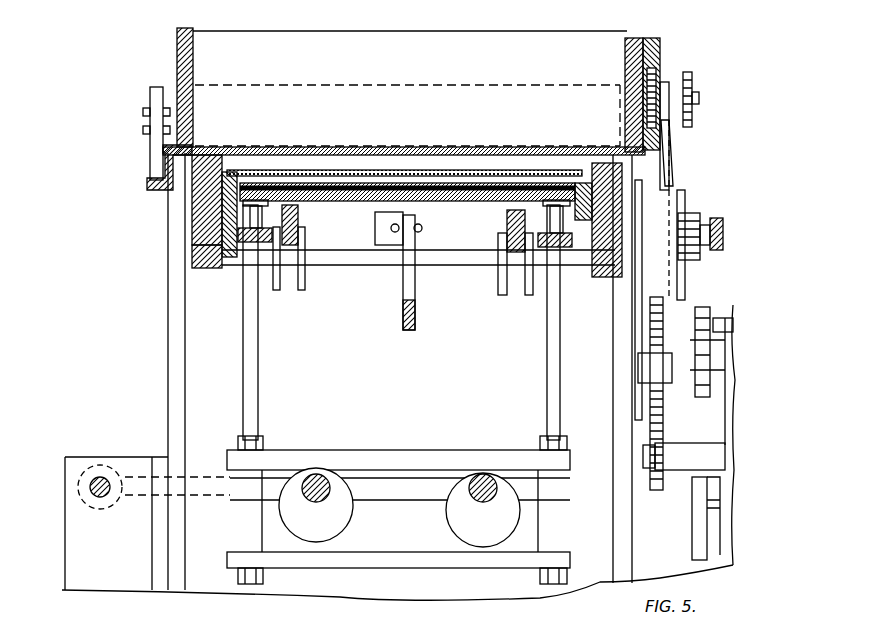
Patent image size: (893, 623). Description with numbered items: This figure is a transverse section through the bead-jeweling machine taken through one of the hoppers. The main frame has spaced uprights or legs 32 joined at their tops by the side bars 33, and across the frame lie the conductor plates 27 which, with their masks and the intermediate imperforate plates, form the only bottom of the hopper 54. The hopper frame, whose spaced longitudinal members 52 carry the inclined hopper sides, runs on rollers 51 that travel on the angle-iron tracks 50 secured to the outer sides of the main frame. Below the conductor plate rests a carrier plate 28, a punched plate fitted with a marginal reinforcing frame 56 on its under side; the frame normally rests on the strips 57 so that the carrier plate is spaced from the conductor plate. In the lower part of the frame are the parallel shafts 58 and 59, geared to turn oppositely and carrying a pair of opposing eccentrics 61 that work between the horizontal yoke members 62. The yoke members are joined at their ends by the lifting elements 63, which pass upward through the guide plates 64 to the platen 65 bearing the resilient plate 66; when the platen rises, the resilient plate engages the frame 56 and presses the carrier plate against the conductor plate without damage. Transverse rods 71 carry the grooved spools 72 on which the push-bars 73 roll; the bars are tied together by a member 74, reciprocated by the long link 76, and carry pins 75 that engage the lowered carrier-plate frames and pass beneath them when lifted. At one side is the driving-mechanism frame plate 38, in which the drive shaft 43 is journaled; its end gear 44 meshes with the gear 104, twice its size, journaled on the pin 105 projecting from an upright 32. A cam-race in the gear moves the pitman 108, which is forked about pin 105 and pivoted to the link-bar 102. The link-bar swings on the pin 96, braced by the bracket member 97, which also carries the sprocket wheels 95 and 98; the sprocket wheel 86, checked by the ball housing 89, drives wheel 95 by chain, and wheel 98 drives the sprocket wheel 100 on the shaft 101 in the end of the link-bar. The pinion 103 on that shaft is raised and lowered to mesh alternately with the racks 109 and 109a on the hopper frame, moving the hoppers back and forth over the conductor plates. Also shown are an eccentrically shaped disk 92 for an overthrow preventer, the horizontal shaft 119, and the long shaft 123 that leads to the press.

The conductor plate 27 is at (452, 180).
The carrier plate 28 is at (328, 169).
The upright or leg 32 is at (168, 392).
The side bar 33 is at (228, 266).
The frame plate 38 is at (735, 387).
The shaft 43 is at (715, 452).
The gear (pinion) 44 is at (660, 440).
The angle-iron track 50 is at (152, 180).
The roller 51 is at (150, 155).
The longitudinal member 52 is at (194, 58).
The hopper 54 is at (170, 46).
The marginal reinforcing frame 56 is at (205, 188).
The strip 57 is at (197, 257).
The shaft 58 is at (332, 494).
The shaft 59 is at (481, 474).
The eccentric 61 is at (345, 520).
The yoke member 62 is at (378, 450).
The lifting element 63 is at (258, 370).
The guide plate 64 is at (240, 237).
The platen 65 is at (375, 198).
The resilient plate 66 is at (458, 196).
The rod 71 is at (323, 265).
The roller or spool 72 is at (283, 275).
The push-bar 73 is at (298, 240).
The member (cross-member) 74 is at (437, 248).
The pin 75 is at (288, 204).
The link 76 is at (415, 316).
The sprocket wheel 86 is at (710, 318).
The tubular housing member 89 is at (733, 323).
The eccentrically-shaped disk 92 is at (705, 522).
The sprocket wheel 95 is at (704, 260).
The pin 96 is at (724, 234).
The bracket member 97 is at (705, 220).
The sprocket wheel 98 is at (683, 262).
The sprocket wheel 100 is at (692, 85).
The shaft 101 is at (699, 100).
The link-bar 102 is at (670, 162).
The pinion 103 is at (657, 76).
The gear 104 is at (660, 380).
The pin 105 is at (640, 368).
The pitman 108 is at (638, 275).
The rack 109 is at (660, 48).
The rack 109a is at (672, 130).
The horizontal shaft 119 is at (165, 458).
The long shaft 123 is at (90, 484).